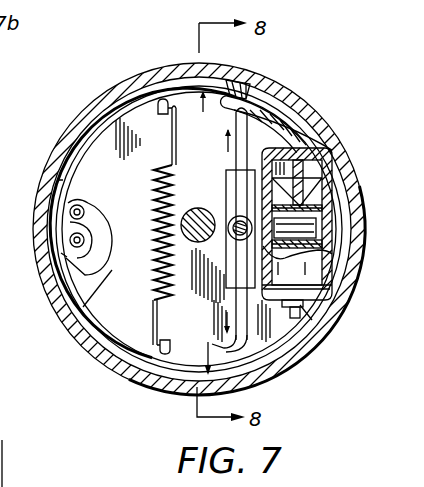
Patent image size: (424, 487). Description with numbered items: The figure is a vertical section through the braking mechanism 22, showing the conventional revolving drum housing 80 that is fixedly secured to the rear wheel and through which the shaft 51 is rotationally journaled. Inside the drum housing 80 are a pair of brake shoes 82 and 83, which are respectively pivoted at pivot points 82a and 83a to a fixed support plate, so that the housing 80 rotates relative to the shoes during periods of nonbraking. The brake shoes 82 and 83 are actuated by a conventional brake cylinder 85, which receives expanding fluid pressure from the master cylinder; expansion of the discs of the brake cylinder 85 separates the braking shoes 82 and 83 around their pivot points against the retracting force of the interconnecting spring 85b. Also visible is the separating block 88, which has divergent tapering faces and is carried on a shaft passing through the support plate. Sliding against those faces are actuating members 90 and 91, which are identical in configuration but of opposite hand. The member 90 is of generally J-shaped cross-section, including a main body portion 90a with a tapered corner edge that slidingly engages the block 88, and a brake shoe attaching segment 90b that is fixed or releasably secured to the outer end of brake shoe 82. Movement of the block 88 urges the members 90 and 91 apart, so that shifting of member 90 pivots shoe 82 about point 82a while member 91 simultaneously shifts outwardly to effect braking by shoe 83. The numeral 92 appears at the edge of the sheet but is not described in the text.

The braking mechanism 22 is at (55, 319).
The drum housing 80 is at (150, 72).
The brake shoe 82 is at (87, 147).
The pivot point 82a is at (83, 247).
The brake shoe 83 is at (148, 340).
The pivot point 83a is at (80, 205).
The brake cylinder 85 is at (347, 160).
The interconnecting spring 85b is at (176, 116).
The separating block 88 is at (226, 193).
The actuating member 90 is at (232, 158).
The main body portion 90a is at (245, 79).
The brake shoe attaching segment 90b is at (275, 117).
The actuating member 91 is at (220, 333).
The shaft 51 is at (187, 250).
The fragment of adjacent figure 92 is at (7, 457).